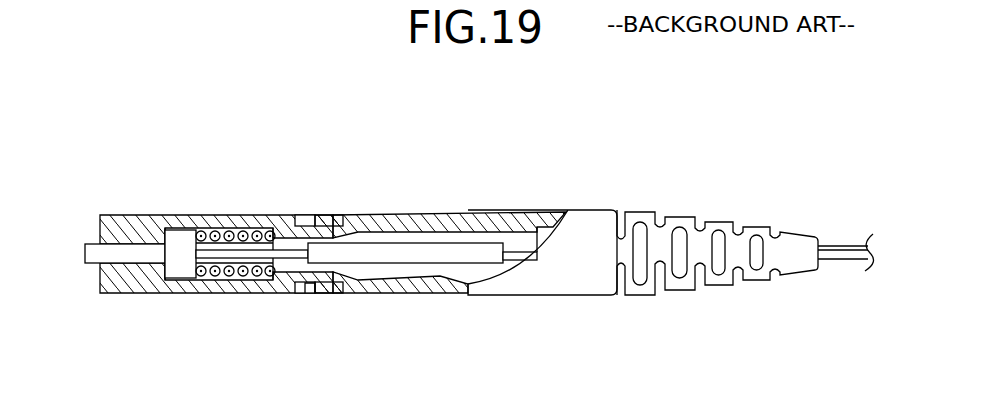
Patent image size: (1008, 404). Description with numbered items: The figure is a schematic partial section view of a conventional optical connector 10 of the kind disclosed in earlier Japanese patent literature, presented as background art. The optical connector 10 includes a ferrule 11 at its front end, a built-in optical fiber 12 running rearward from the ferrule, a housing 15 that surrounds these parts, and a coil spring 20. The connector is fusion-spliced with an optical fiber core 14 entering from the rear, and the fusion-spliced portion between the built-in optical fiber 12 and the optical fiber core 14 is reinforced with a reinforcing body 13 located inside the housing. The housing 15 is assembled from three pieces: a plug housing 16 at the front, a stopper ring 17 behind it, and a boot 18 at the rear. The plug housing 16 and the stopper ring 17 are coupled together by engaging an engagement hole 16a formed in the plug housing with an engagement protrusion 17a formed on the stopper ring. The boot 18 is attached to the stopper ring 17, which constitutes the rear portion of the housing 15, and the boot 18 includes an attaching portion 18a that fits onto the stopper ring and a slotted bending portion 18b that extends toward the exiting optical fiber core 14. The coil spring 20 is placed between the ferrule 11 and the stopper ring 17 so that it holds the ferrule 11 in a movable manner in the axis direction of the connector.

The optical connector 10 is at (568, 112).
The ferrule 11 is at (126, 255).
The built-in optical fiber 12 is at (237, 254).
The reinforcing body 13 is at (397, 259).
The optical fiber core 14 is at (517, 259).
The housing 15 is at (307, 303).
The plug housing 16 is at (125, 224).
The engagement hole 16a is at (303, 220).
The stopper ring 17 is at (393, 224).
The engagement protrusion 17a is at (313, 220).
The boot 18 is at (676, 206).
The attaching portion 18a is at (580, 234).
The bending portion 18b is at (738, 240).
The coil spring 20 is at (223, 274).